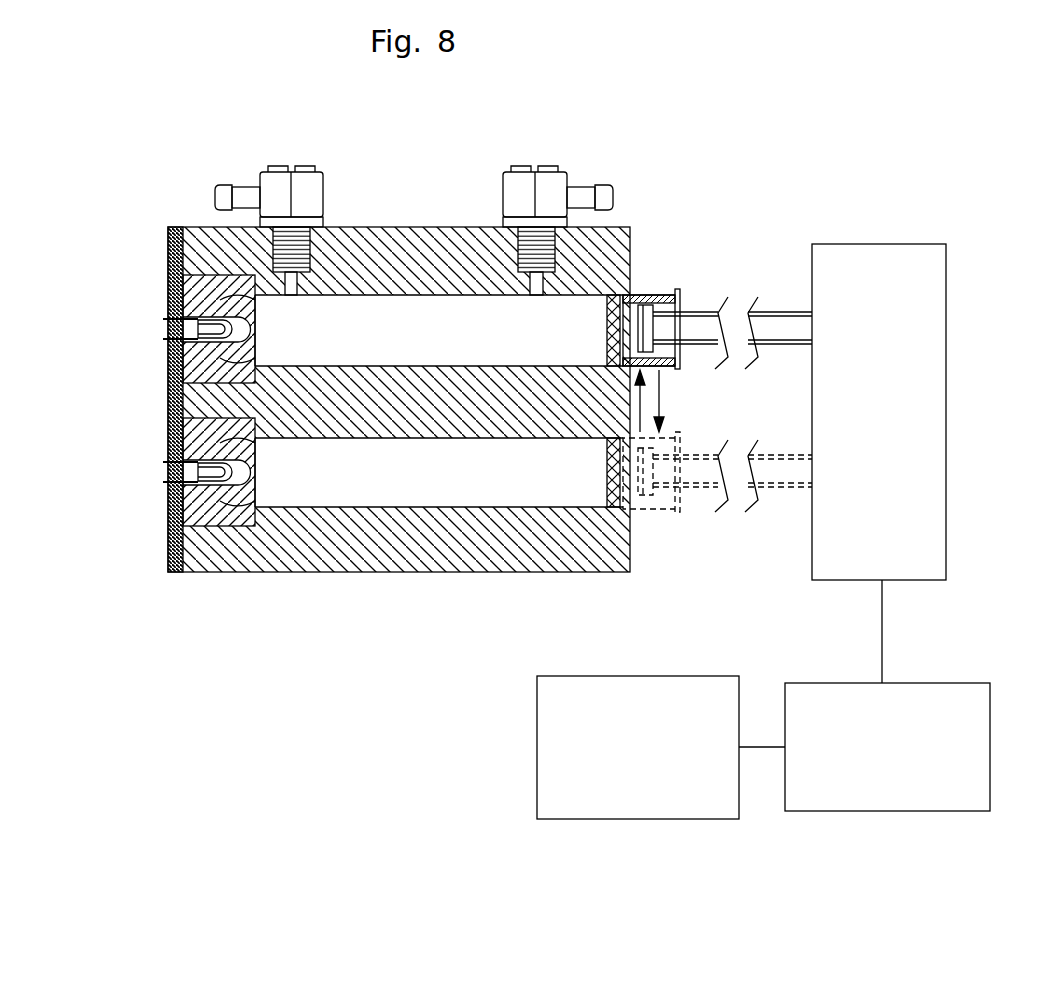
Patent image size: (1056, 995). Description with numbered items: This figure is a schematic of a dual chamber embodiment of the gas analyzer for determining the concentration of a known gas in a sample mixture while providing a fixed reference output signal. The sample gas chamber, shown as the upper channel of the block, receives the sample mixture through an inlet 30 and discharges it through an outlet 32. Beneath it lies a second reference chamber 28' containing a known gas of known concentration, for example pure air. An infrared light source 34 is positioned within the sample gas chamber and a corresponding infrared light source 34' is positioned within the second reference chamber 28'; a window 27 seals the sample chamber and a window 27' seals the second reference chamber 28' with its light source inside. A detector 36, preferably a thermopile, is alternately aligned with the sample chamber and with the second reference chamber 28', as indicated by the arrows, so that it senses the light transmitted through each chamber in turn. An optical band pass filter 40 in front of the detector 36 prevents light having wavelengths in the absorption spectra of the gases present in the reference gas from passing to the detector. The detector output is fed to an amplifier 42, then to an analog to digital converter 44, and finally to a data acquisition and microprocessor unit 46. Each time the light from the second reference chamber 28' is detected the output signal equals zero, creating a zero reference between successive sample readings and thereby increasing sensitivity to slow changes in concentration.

The window 27 is at (664, 264).
The window 27' is at (709, 533).
The second reference chamber 28' is at (399, 439).
The inlet 30 is at (313, 185).
The outlet 32 is at (517, 185).
The infrared light source 34 is at (199, 236).
The infrared light source 34' is at (196, 562).
The detector 36 is at (678, 298).
The optical band pass filter 40 is at (727, 246).
The amplifier 42 is at (946, 294).
The analog to digital converter 44 is at (883, 811).
The data acquisition and microprocessor unit 46 is at (625, 819).